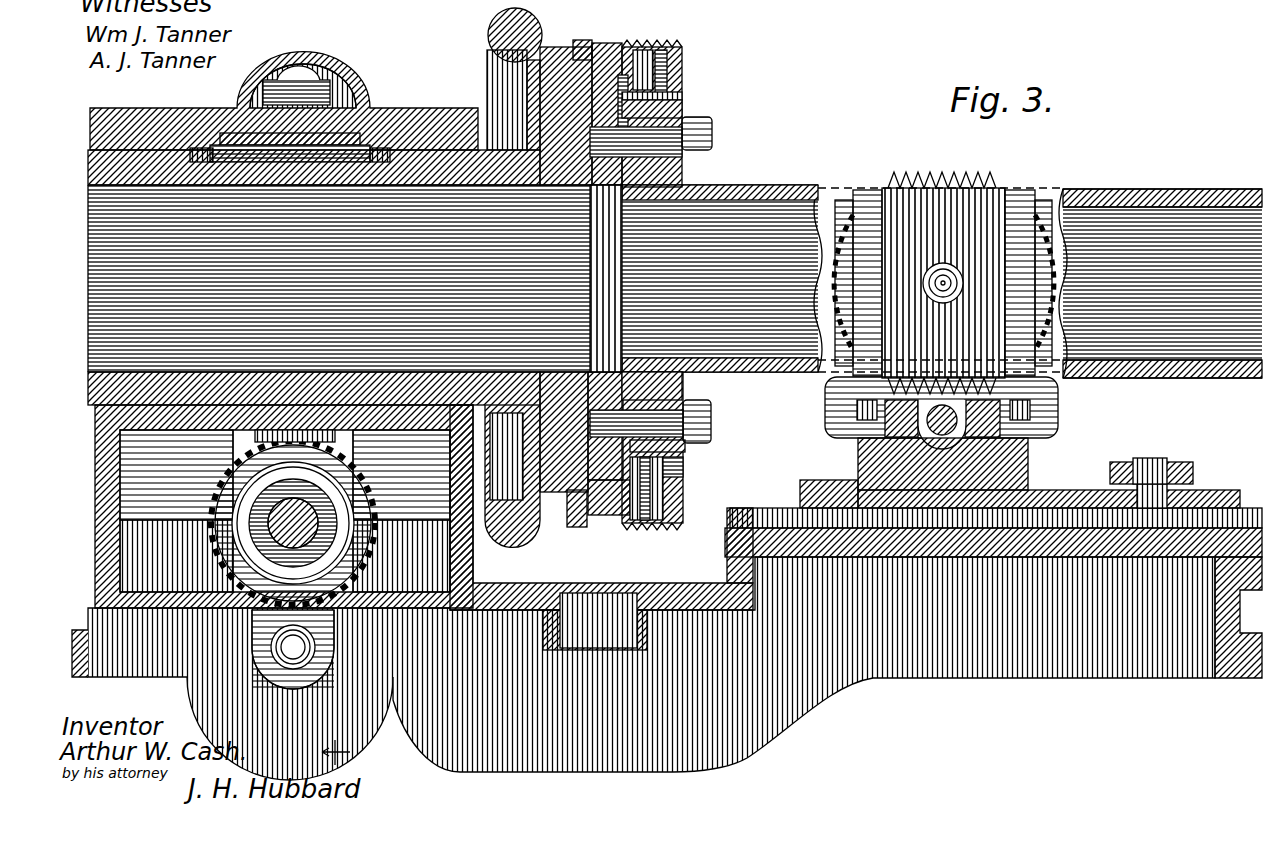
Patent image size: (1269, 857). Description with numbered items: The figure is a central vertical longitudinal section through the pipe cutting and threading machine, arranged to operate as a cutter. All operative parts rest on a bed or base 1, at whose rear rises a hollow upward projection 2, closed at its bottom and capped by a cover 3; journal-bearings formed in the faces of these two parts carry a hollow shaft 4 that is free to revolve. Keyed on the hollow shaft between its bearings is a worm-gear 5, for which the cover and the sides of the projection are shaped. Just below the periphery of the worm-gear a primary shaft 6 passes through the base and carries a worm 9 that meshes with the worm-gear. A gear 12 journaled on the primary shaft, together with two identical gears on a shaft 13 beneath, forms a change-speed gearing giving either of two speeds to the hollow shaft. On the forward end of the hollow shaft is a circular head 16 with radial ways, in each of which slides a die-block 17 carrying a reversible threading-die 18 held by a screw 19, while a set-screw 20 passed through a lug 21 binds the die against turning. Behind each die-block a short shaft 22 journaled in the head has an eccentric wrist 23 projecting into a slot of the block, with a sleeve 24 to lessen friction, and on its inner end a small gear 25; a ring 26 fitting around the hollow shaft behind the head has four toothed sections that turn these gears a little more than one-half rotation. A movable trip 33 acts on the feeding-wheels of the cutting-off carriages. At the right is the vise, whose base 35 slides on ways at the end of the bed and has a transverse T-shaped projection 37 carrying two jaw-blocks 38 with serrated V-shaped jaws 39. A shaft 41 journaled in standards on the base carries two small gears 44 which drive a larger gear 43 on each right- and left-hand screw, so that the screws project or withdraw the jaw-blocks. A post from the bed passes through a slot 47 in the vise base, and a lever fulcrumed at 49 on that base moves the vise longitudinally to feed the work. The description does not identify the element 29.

The bed or base 1 is at (1236, 612).
The hollow upward projection 2 is at (100, 452).
The cap or cover 3 is at (95, 120).
The hollow shaft 4 is at (92, 155).
The worm-gear 5 is at (332, 0).
The primary shaft 6 is at (225, 560).
The worm 9 is at (250, 540).
The gear 12 is at (215, 520).
The shaft 13 is at (270, 660).
The circular head 16 is at (640, 48).
The die-block 17 is at (592, 318).
The threading-die 18 is at (682, 48).
The screw 19 is at (708, 125).
The set-screw 20 is at (682, 96).
The lug 21 is at (667, 80).
The short shaft 22 is at (606, 60).
The eccentric wrist 23 is at (648, 52).
The sleeve 24 is at (635, 50).
The small gear 25 is at (578, 55).
The ring 26 is at (540, 118).
The lever 29 is at (490, 38).
The movable trip 33 is at (840, 482).
The vise base 35 is at (1222, 490).
The T-shaped projection 37 is at (1000, 412).
The jaw-block 38 is at (1060, 395).
The jaws 39 is at (868, 190).
The shaft 41 is at (928, 428).
The gear 43 is at (970, 178).
The small gear 44 is at (1028, 455).
The slot 47 is at (1115, 462).
The fulcrum 49 is at (1150, 460).